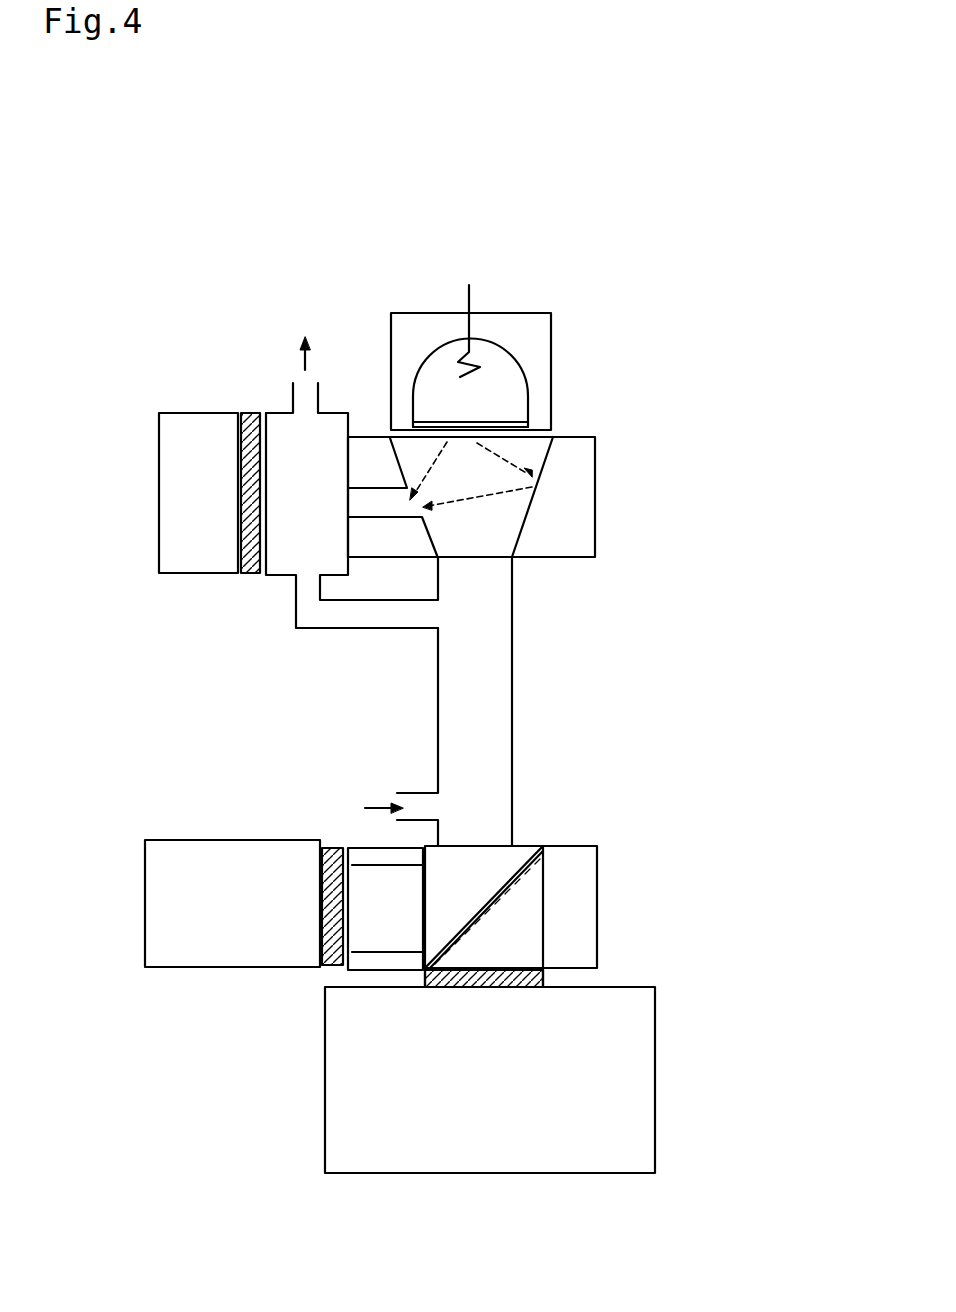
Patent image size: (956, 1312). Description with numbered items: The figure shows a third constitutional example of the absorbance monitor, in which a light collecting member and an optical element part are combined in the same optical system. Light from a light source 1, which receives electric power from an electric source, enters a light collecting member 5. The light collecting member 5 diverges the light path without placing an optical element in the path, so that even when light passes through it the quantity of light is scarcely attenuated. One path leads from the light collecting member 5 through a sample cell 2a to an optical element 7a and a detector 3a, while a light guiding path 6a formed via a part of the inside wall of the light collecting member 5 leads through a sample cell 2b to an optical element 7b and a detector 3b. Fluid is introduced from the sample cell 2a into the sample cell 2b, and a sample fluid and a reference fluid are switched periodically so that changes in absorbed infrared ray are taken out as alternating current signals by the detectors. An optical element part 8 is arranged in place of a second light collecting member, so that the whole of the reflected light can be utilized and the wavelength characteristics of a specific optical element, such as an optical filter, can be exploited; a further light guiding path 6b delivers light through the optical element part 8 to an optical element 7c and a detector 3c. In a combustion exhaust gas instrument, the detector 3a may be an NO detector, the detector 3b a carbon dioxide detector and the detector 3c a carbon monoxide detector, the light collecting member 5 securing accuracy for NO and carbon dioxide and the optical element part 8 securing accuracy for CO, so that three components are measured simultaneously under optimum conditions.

The light source 1 is at (551, 373).
The sample cell 2a is at (512, 712).
The sample cell 2b is at (278, 575).
The detector 3a is at (540, 1160).
The detector 3b is at (159, 495).
The detector 3c is at (229, 843).
The light collecting member 5 is at (595, 500).
The light guiding path 6a is at (383, 510).
The light guiding path 6b is at (390, 943).
The optical element 7a is at (533, 985).
The optical element 7b is at (252, 412).
The optical element 7c is at (337, 847).
The optical element part 8 is at (587, 885).